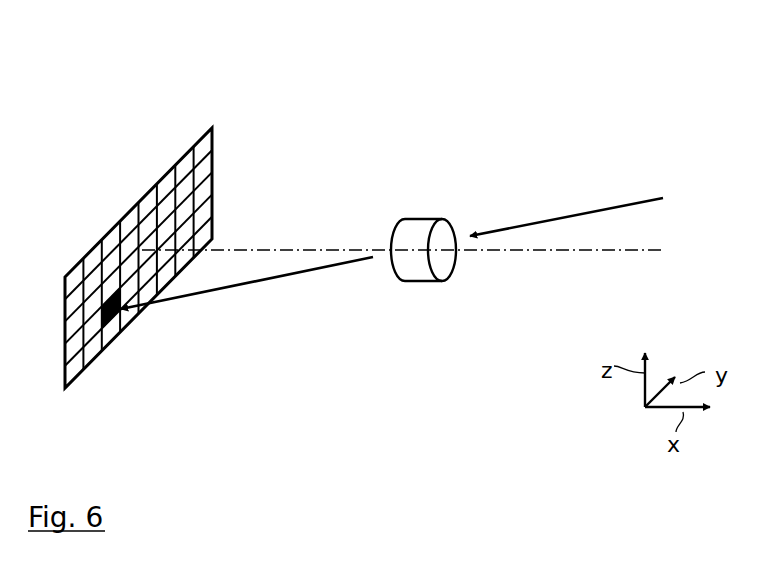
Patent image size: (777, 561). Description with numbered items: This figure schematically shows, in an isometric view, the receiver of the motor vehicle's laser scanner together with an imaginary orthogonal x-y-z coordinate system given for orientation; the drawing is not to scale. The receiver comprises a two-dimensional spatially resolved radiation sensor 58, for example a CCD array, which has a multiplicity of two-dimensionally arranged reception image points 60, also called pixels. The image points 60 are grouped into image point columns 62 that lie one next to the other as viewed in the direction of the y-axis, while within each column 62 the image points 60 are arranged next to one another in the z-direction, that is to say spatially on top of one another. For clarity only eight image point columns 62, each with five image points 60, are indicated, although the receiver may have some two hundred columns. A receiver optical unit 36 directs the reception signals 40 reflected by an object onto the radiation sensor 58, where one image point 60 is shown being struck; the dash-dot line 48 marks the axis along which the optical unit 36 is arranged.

The receiver optical unit 36 is at (417, 233).
The reception signals 40 is at (300, 278).
The optical axis 48 is at (525, 251).
The radiation sensor 58 is at (139, 228).
The reception image points 60 is at (84, 264).
The image point columns 62 is at (163, 172).